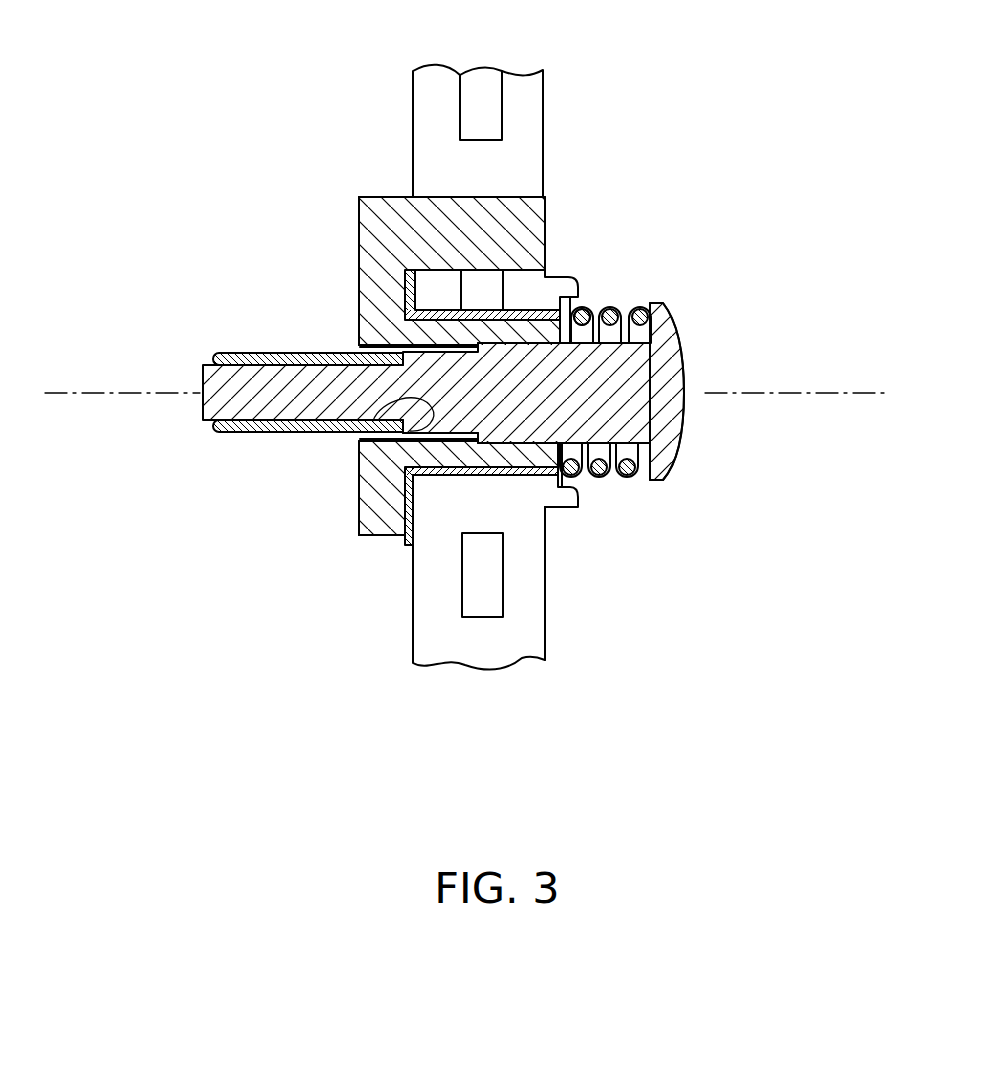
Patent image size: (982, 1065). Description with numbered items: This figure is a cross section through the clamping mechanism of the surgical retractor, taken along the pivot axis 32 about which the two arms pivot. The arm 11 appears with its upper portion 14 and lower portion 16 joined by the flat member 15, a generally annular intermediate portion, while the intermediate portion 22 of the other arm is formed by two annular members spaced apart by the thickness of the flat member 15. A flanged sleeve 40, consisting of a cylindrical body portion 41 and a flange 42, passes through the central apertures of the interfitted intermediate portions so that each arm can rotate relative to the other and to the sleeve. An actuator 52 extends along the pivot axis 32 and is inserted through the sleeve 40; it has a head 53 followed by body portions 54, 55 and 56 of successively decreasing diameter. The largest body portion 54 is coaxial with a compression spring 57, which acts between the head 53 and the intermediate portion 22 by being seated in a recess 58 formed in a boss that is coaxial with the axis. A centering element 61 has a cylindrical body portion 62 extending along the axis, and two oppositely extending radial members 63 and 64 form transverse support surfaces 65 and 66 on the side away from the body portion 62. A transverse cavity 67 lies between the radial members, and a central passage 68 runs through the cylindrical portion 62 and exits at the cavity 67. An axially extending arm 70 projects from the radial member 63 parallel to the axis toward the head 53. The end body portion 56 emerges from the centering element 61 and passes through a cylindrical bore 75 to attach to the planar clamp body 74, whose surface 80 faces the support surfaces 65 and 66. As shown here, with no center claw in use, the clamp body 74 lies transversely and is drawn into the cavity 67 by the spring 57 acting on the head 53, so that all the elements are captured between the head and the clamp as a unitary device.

The arm 11 is at (556, 89).
The upper portion 14 is at (442, 72).
The flat member 15 is at (490, 283).
The lower portion 16 is at (478, 648).
The intermediate portion 22 is at (533, 290).
The pivot axis 32 is at (108, 393).
The flanged sleeve 40 is at (520, 494).
The cylindrical body portion 41 is at (463, 477).
The flange 42 is at (403, 541).
The actuator 52 is at (698, 345).
The head 53 is at (665, 430).
The body portion 54 is at (615, 422).
The body portion 55 is at (543, 460).
The end body portion 56 is at (275, 407).
The compression spring 57 is at (615, 306).
The recess 58 is at (585, 309).
The centering element 61 is at (350, 192).
The cylindrical body portion 62 is at (533, 417).
The radial member 63 is at (368, 291).
The radial member 64 is at (377, 527).
The transverse support surface 65 is at (348, 243).
The transverse support surface 66 is at (361, 517).
The transverse cavity 67 is at (341, 370).
The central passage 68 is at (341, 443).
The axially extending arm 70 is at (382, 210).
The clamp body 74 is at (211, 344).
The bore 75 is at (240, 414).
The surface 80 is at (347, 431).